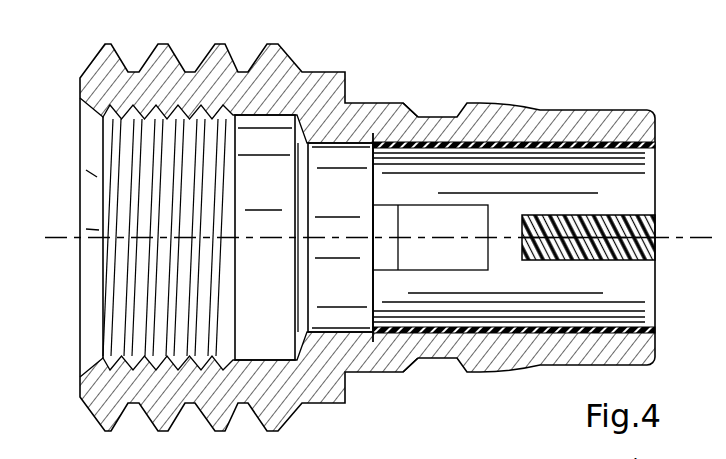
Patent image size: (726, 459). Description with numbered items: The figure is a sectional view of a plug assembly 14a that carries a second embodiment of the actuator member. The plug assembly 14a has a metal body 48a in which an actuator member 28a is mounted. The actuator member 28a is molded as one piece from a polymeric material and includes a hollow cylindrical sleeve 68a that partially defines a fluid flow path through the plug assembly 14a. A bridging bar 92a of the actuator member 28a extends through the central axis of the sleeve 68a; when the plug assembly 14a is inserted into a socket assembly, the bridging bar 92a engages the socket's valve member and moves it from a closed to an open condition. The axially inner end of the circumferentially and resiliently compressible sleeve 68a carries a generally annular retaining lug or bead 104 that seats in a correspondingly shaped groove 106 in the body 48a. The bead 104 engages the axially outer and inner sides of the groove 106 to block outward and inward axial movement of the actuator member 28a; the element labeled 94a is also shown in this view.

The plug assembly 14a is at (533, 66).
The metal body 48a is at (318, 94).
The actuator member 28a is at (616, 130).
The hollow cylindrical sleeve 68a is at (550, 140).
The annular retaining lug or bead 104 is at (407, 130).
The groove 106 is at (378, 138).
The bridging bar 92a is at (660, 219).
The ring bore 94a is at (630, 243).